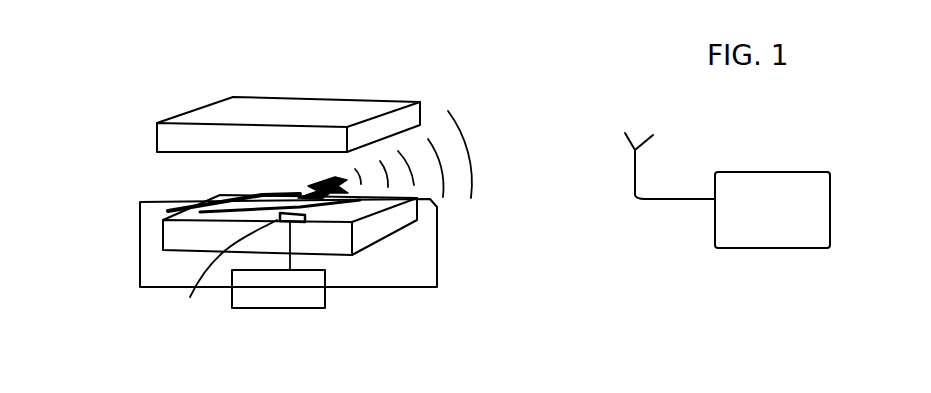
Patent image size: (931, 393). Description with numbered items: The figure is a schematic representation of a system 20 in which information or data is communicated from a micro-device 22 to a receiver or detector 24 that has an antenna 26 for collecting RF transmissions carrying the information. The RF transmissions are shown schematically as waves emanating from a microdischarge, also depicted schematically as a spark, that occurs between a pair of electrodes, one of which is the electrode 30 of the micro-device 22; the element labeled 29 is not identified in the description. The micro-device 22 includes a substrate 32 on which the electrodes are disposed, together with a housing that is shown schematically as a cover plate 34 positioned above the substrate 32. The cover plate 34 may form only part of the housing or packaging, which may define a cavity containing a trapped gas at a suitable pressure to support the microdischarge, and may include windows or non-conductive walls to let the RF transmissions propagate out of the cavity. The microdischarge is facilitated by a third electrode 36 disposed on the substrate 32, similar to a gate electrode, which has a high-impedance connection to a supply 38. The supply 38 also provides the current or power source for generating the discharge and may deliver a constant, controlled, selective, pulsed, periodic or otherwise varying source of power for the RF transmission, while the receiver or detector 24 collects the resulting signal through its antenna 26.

The system 20 is at (500, 77).
The micro-device 22 is at (118, 188).
The receiver or detector 24 is at (765, 248).
The antenna 26 is at (637, 167).
The electrode 29 is at (278, 203).
The electrode 30 is at (323, 207).
The substrate 32 is at (397, 222).
The cover plate 34 is at (157, 131).
The third electrode 36 is at (240, 270).
The supply 38 is at (277, 310).